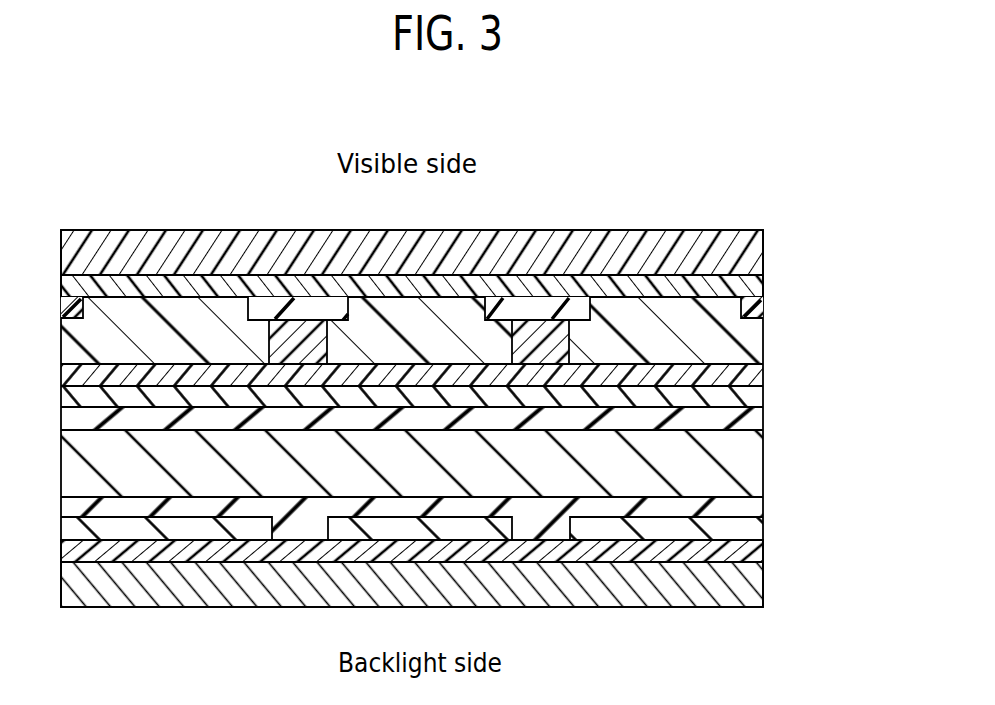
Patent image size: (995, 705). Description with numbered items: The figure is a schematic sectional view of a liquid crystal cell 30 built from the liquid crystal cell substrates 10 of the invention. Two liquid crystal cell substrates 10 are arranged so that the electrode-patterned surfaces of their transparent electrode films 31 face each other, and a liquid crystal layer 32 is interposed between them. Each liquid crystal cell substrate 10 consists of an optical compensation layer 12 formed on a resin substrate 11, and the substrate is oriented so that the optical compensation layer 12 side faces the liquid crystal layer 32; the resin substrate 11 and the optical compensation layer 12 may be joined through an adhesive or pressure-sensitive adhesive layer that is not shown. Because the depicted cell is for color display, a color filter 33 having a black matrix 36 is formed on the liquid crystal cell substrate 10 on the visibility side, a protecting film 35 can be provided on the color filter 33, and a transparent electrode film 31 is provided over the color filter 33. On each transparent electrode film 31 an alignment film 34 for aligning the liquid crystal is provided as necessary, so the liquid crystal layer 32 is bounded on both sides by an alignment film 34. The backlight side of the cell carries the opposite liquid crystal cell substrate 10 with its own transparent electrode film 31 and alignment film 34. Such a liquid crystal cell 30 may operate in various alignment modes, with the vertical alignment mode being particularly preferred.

The liquid crystal cell 30 is at (678, 140).
The liquid crystal cell substrate 10 is at (839, 250).
The resin substrate 11 is at (752, 255).
The optical compensation layer 12 is at (752, 283).
The transparent electrode film 31 is at (752, 396).
The liquid crystal layer 32 is at (752, 470).
The color filter 33 is at (752, 342).
The alignment film 34 is at (752, 420).
The protecting film 35 is at (752, 374).
The black matrix 36 is at (752, 311).